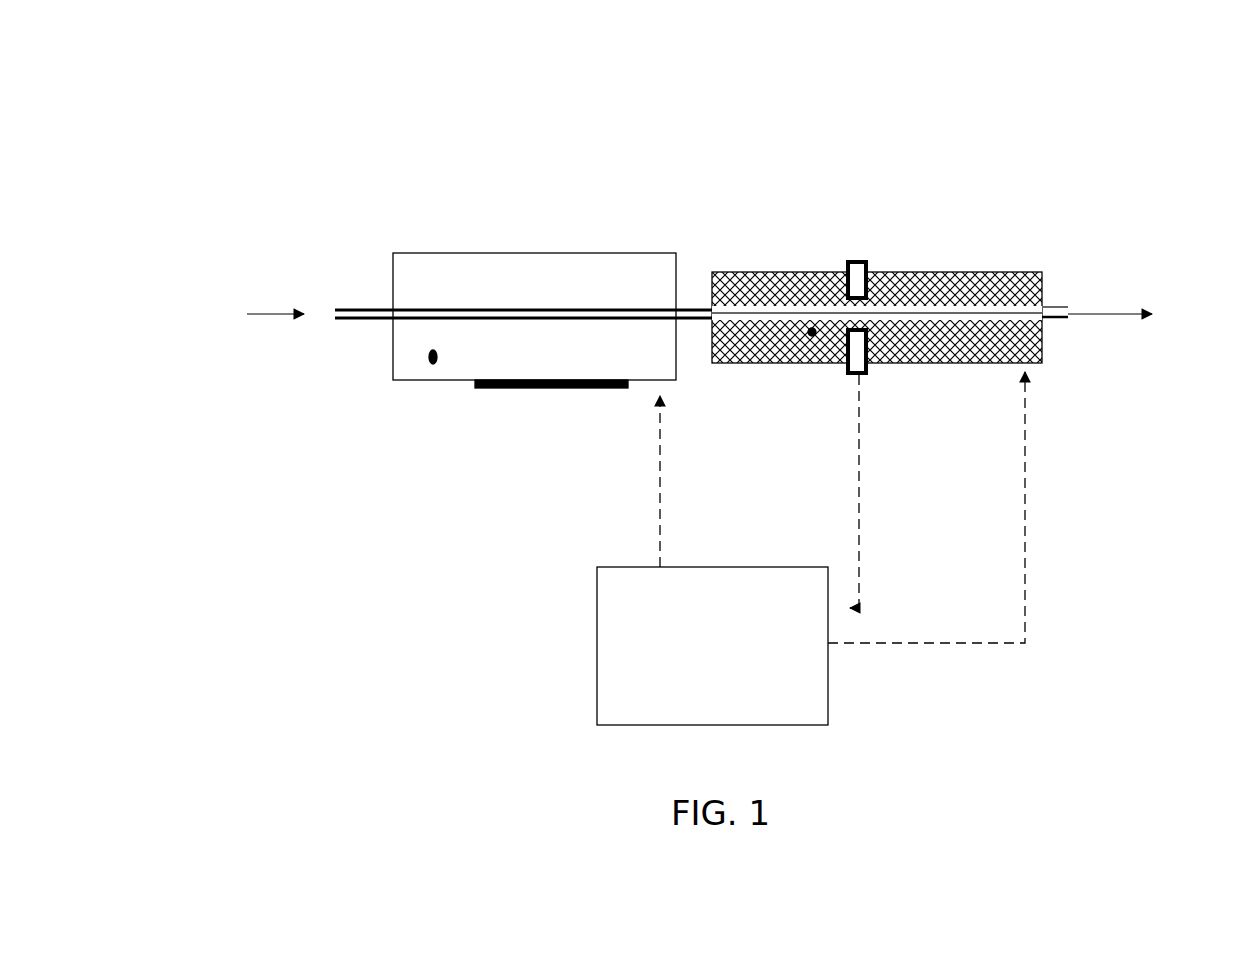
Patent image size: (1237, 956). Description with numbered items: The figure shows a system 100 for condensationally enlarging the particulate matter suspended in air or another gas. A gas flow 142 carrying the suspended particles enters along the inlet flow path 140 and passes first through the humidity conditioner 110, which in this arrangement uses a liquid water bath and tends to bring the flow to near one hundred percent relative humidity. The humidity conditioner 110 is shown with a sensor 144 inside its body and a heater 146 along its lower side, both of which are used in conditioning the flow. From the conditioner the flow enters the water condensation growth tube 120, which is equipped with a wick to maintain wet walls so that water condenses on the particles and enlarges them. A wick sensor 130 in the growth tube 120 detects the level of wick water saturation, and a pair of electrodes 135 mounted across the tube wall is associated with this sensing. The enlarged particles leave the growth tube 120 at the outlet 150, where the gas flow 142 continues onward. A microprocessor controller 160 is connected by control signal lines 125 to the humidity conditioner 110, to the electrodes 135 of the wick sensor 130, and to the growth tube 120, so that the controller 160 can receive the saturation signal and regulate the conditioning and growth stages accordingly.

The system 100 is at (1046, 70).
The humidity conditioner 110 is at (553, 253).
The water condensation growth tube 120 is at (963, 272).
The control signal lines 125 is at (861, 530).
The wick sensor 130 is at (812, 338).
The electrodes 135 is at (858, 262).
The inlet flow path 140 is at (384, 308).
The gas flow 142 is at (265, 310).
The sensor 144 is at (432, 366).
The heater 146 is at (558, 392).
The outlet 150 is at (1060, 318).
The microprocessor controller 160 is at (712, 646).